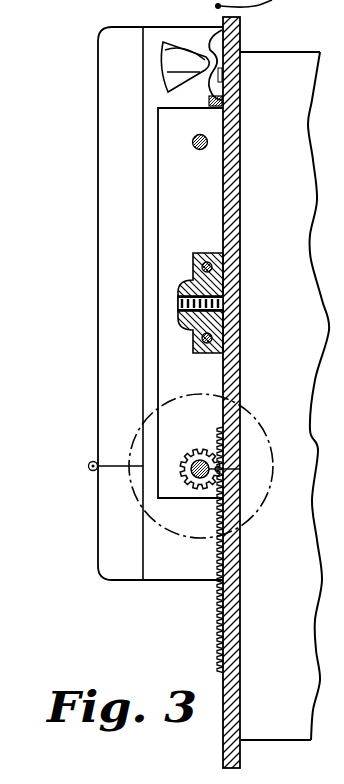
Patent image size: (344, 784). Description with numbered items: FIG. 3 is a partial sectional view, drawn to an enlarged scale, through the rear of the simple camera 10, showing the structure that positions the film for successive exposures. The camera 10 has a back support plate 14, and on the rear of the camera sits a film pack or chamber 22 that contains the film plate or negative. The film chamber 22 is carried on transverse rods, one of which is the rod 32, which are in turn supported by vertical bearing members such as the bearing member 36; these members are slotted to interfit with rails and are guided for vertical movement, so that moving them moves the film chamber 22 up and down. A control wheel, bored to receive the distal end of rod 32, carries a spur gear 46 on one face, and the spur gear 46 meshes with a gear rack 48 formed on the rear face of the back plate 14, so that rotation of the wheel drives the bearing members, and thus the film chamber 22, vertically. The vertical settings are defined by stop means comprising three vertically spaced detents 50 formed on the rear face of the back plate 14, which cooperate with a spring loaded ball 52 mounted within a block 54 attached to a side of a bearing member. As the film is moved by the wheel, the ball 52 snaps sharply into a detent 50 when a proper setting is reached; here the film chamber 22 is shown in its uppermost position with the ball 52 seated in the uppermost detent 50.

The camera 10 is at (291, 614).
The back support plate 14 is at (224, 741).
The film pack or chamber 22 is at (112, 160).
The transverse rod 32 is at (228, 470).
The vertical bearing member 36 is at (199, 182).
The spur gear 46 is at (191, 461).
The gear rack 48 is at (218, 610).
The detent 50 is at (223, 397).
The spring loaded ball 52 is at (225, 298).
The block 54 is at (205, 262).